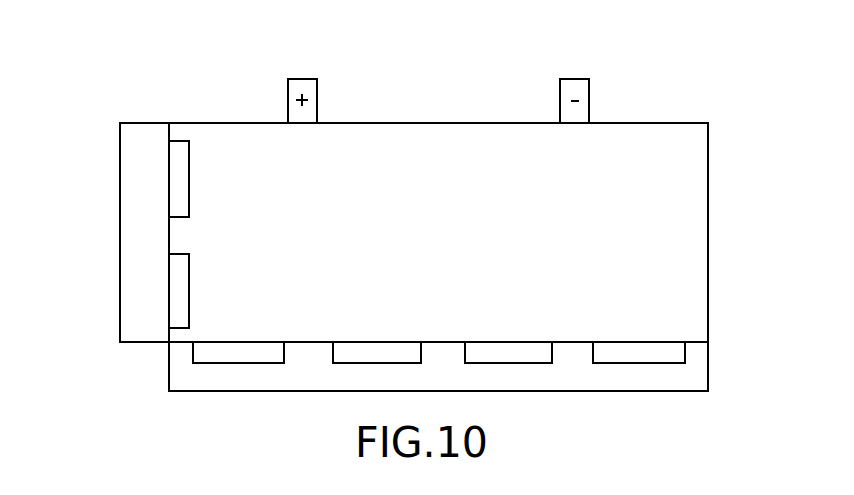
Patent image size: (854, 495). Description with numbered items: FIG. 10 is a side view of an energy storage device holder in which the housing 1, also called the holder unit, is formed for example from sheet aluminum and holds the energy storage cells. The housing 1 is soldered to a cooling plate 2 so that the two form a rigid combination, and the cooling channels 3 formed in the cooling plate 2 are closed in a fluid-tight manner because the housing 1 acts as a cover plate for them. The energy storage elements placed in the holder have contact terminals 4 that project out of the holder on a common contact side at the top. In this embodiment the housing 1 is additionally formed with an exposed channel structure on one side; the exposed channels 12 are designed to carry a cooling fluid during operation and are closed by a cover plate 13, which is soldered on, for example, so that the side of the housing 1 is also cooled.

The housing 1 is at (708, 192).
The cooling plate 2 is at (605, 390).
The cooling channels 3 is at (240, 355).
The contact terminals 4 is at (303, 79).
The exposed channels 12 is at (188, 177).
The cover plate 13 is at (134, 223).